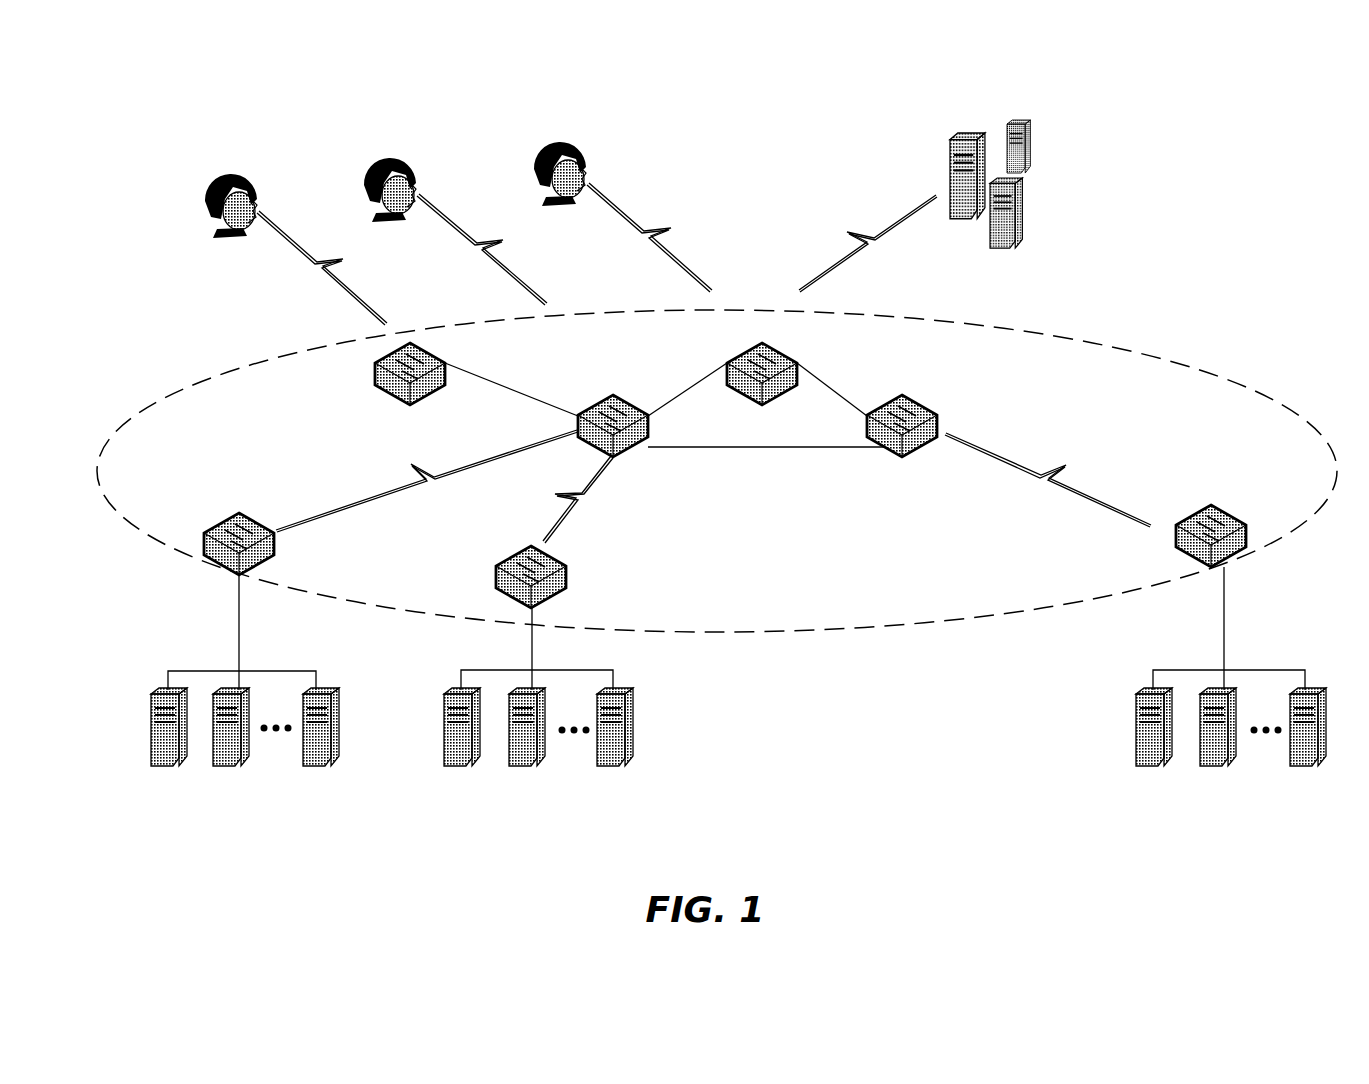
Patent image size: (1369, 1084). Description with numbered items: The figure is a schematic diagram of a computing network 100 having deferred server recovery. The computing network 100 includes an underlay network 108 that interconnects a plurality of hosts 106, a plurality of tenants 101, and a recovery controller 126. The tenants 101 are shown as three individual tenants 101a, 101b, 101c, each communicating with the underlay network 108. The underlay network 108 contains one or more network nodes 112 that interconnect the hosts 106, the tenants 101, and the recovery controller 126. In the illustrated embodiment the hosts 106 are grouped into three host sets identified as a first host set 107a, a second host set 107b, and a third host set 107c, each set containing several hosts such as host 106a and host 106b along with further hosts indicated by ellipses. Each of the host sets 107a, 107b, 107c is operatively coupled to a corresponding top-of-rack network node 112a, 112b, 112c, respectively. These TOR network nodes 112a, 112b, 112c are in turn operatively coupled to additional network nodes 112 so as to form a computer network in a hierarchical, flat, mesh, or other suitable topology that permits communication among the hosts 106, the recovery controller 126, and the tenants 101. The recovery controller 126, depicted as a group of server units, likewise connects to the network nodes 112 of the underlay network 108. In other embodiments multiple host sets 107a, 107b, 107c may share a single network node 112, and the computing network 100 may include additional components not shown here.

The computing network 100 is at (1122, 198).
The tenants 101 is at (202, 126).
The tenant 101a is at (194, 184).
The tenant 101b is at (354, 169).
The tenant 101c is at (521, 152).
The hosts 106 is at (118, 725).
The host 106a is at (156, 694).
The host 106b is at (614, 690).
The first host set 107a is at (204, 683).
The second host set 107b is at (526, 699).
The third host set 107c is at (1150, 692).
The underlay network 108 is at (717, 471).
The network nodes 112 is at (385, 352).
The top-of-rack network node 112a is at (215, 525).
The top-of-rack network node 112b is at (520, 555).
The top-of-rack network node 112c is at (1235, 512).
The recovery controller 126 is at (983, 210).